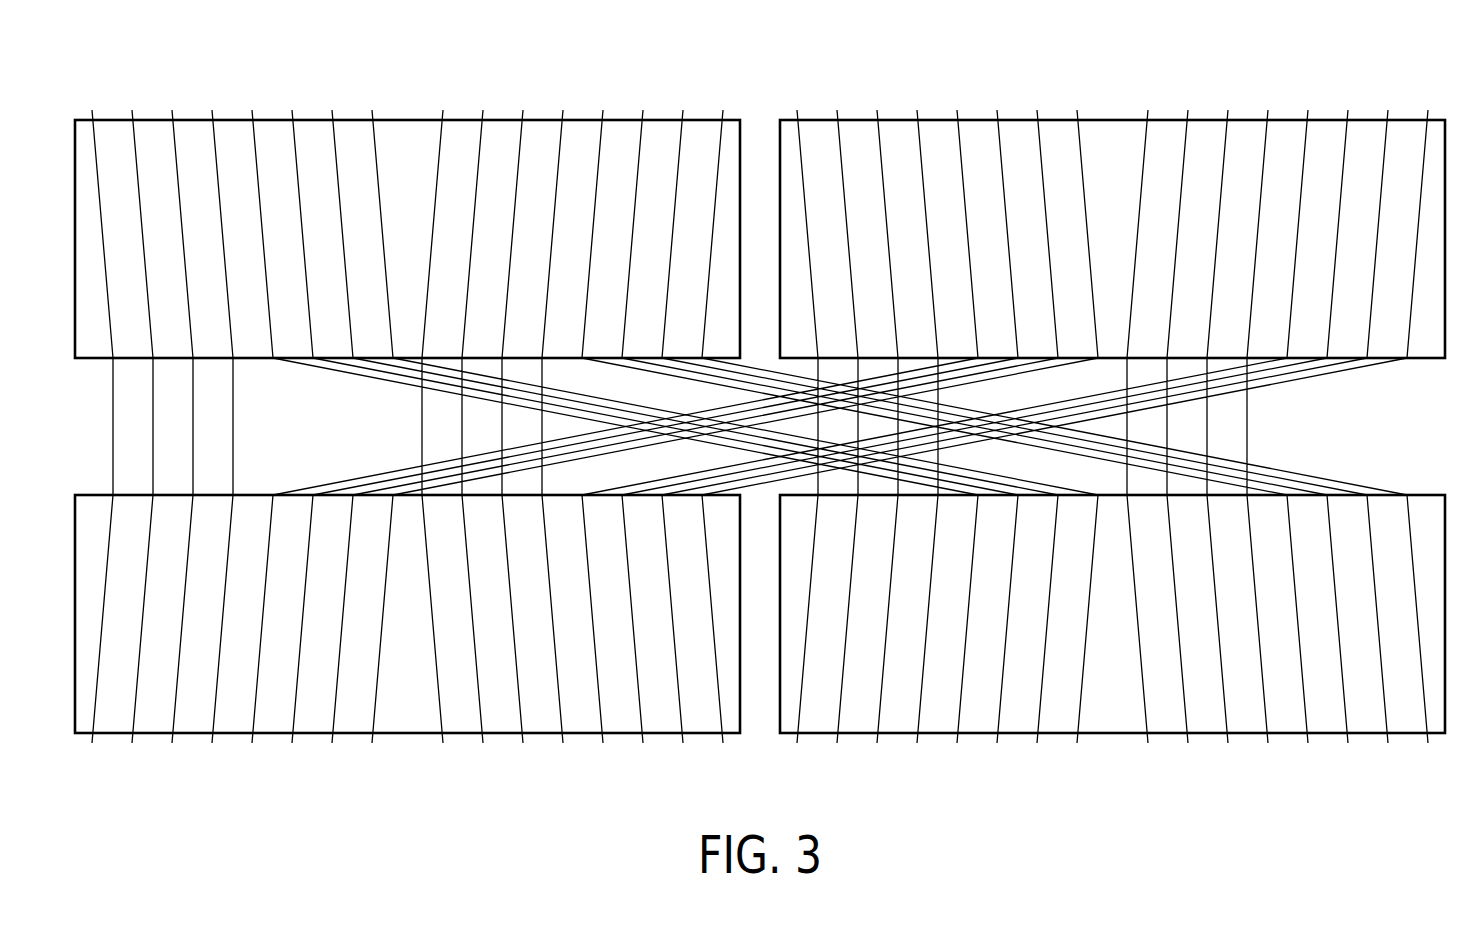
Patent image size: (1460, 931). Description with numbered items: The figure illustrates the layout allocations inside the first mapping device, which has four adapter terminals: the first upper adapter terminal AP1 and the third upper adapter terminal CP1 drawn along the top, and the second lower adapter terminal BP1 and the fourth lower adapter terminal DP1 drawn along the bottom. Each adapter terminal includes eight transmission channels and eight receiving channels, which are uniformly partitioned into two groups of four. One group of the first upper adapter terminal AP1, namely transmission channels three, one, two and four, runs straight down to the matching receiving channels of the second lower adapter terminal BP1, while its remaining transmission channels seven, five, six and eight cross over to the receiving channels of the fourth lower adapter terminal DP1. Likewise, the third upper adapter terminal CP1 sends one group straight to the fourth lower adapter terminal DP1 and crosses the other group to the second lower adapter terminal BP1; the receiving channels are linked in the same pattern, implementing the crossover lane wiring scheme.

The first upper adapter terminal AP1 is at (406, 119).
The second lower adapter terminal BP1 is at (407, 734).
The third upper adapter terminal CP1 is at (1111, 119).
The fourth lower adapter terminal DP1 is at (1111, 734).